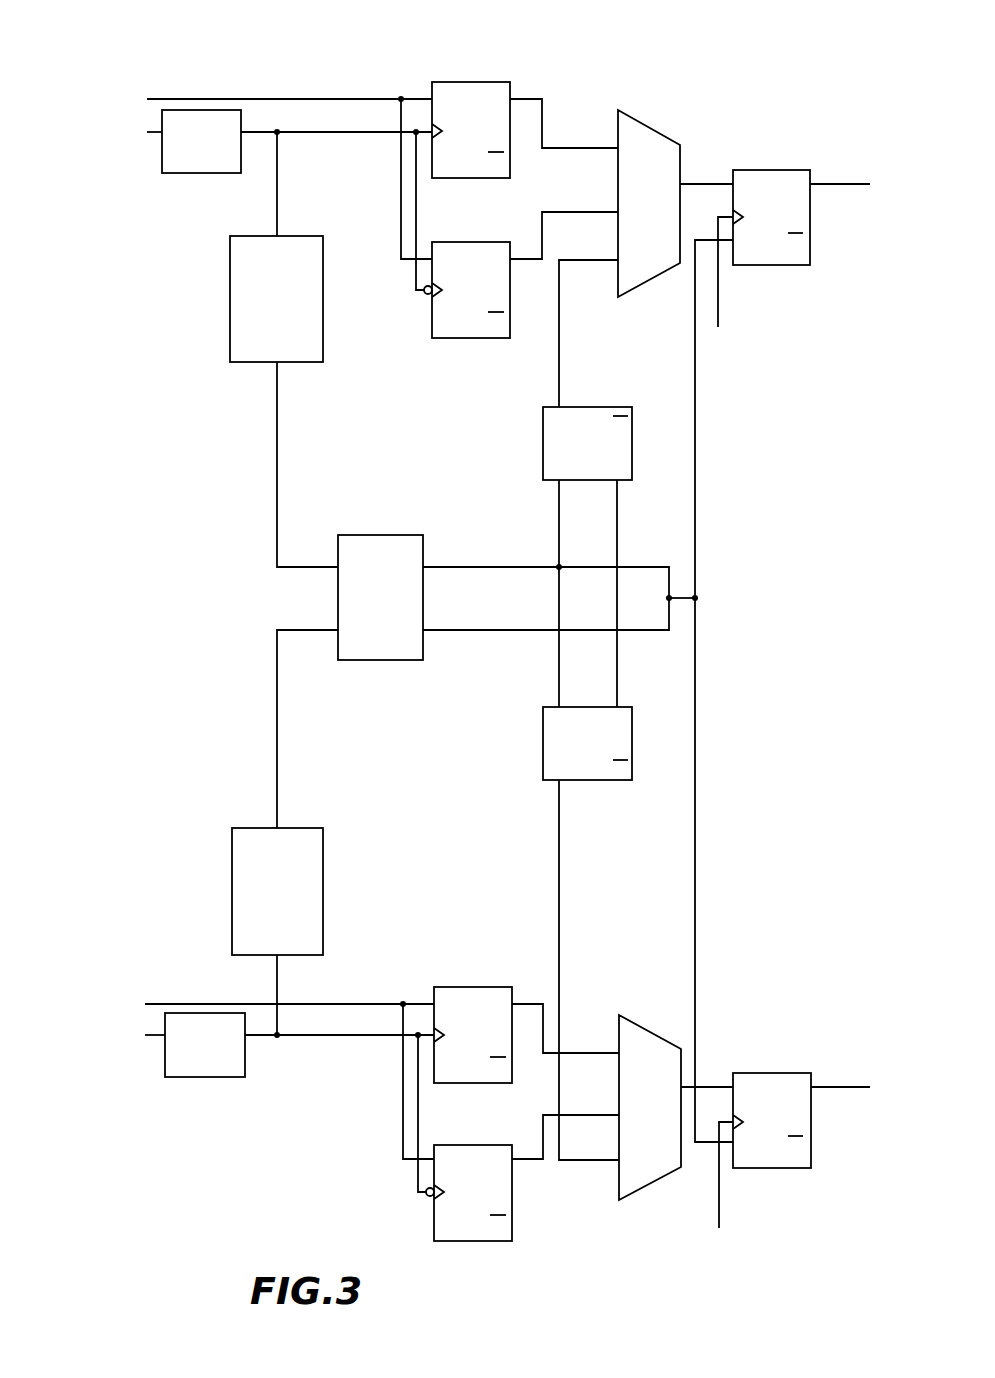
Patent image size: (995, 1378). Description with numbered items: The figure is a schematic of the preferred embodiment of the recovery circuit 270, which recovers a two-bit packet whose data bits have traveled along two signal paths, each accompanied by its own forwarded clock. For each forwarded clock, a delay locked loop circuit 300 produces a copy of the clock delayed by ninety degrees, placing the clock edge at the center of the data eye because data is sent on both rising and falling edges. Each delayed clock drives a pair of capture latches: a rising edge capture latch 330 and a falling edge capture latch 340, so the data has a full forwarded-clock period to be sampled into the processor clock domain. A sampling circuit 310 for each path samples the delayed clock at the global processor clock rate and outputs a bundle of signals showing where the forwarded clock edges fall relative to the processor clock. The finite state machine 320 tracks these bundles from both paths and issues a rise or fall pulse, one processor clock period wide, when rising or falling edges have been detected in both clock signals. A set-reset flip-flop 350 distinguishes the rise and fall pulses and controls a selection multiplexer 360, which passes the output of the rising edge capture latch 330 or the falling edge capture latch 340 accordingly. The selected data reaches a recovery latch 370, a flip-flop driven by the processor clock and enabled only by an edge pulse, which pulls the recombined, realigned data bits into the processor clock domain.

The recovery circuit 270 is at (155, 60).
The delay locked loop circuit 300 is at (182, 174).
The sampling circuit 310 is at (230, 340).
The finite state machine 320 is at (423, 645).
The rising edge capture latch 330 is at (510, 83).
The falling edge capture latch 340 is at (460, 338).
The set-reset flip-flop 350 is at (590, 407).
The selection multiplexer 360 is at (664, 133).
The recovery latch 370 is at (785, 170).